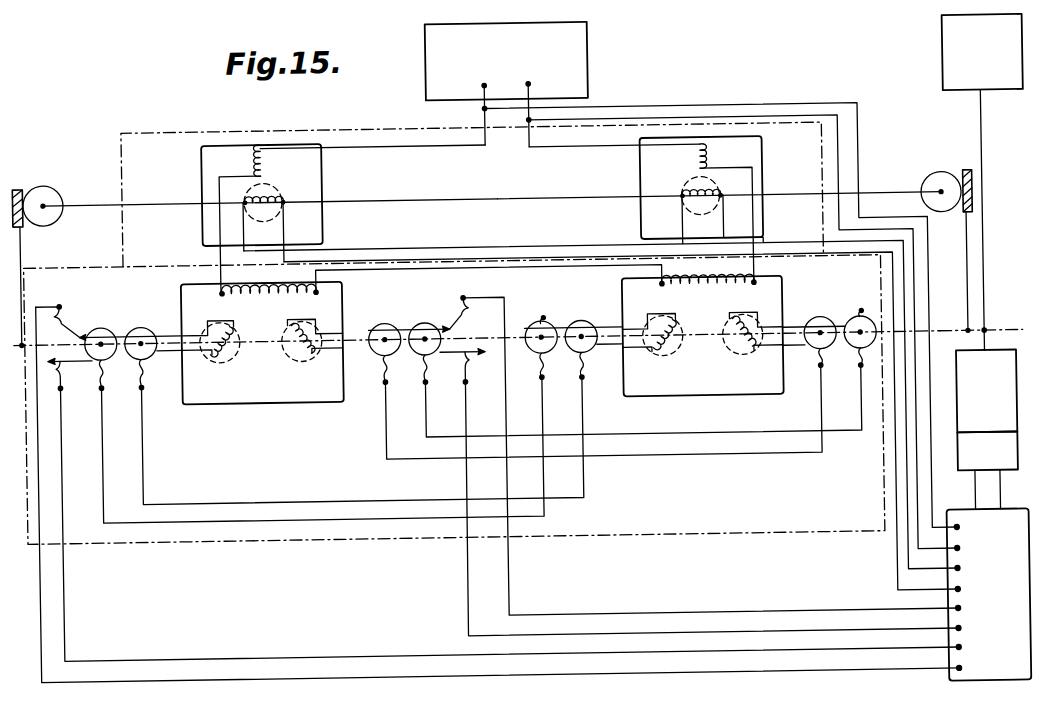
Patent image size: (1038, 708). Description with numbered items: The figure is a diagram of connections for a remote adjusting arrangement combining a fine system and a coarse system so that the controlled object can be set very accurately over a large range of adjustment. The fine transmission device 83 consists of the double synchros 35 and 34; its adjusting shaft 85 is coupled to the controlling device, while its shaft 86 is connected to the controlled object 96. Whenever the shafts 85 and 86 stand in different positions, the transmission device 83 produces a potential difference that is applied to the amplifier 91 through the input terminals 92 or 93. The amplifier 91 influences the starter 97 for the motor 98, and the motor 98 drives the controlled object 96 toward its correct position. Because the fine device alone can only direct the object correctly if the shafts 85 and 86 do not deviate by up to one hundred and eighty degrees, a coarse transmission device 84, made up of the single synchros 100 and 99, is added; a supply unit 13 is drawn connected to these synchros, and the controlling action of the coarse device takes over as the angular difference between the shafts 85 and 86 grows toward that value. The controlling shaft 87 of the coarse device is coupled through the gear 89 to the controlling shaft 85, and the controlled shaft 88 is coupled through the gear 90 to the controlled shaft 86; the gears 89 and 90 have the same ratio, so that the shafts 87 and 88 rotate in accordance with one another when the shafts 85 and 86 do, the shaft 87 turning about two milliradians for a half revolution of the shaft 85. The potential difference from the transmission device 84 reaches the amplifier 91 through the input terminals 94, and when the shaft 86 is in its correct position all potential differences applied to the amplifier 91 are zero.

The power supply 13 is at (507, 85).
The double synchro 34 is at (784, 308).
The double synchro 35 is at (191, 310).
The transmission device 83 is at (300, 528).
The transmission device 84 is at (174, 145).
The adjusting shaft 85 is at (176, 341).
The shaft 86 is at (955, 334).
The controlling shaft 87 is at (75, 196).
The controlled shaft 88 is at (878, 198).
The gear 89 is at (40, 185).
The gear 90 is at (946, 185).
The amplifier 91 is at (989, 594).
The input terminal 92 is at (975, 620).
The input terminal 93 is at (975, 658).
The input terminals 94 is at (974, 582).
The controlled object 96 is at (984, 182).
The starter 97 is at (987, 471).
The motor 98 is at (986, 391).
The single synchro 99 is at (670, 166).
The single synchro 100 is at (315, 177).